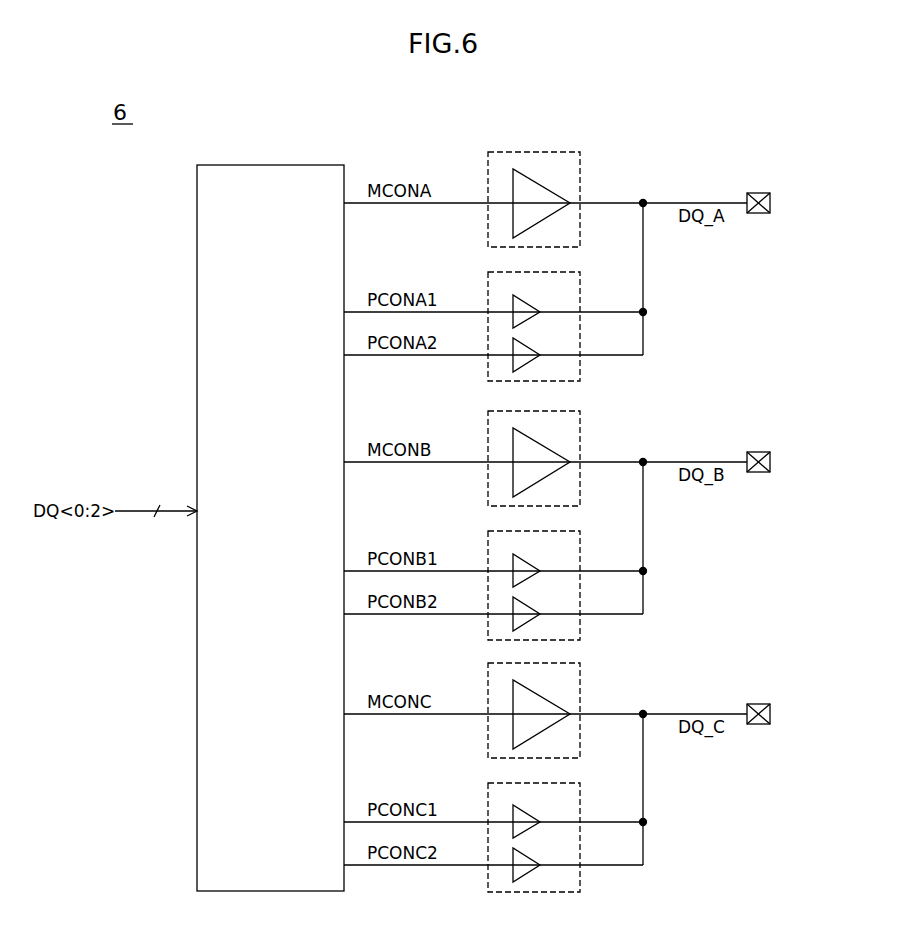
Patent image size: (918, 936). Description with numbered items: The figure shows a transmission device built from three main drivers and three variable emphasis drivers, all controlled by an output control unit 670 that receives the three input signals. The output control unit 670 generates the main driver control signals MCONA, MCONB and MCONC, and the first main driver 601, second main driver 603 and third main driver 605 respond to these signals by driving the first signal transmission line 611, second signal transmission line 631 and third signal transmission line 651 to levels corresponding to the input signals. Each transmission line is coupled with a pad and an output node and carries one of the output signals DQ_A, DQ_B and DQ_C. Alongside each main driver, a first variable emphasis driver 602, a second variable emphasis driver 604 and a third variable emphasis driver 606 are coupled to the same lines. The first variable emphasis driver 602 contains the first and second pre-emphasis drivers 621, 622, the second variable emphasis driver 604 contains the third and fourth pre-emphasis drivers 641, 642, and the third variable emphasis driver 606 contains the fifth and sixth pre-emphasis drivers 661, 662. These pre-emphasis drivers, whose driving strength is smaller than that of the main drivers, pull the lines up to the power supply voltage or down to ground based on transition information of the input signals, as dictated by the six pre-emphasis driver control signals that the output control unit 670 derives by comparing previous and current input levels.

The output control unit 670 is at (290, 165).
The first main driver 601 is at (580, 165).
The first variable emphasis driver 602 is at (556, 309).
The first pre-emphasis driver 621 is at (531, 301).
The second pre-emphasis driver 622 is at (531, 345).
The first signal transmission line 611 is at (770, 193).
The second main driver 603 is at (580, 424).
The second variable emphasis driver 604 is at (556, 568).
The third pre-emphasis driver 641 is at (531, 560).
The fourth pre-emphasis driver 642 is at (531, 604).
The second signal transmission line 631 is at (770, 452).
The third main driver 605 is at (580, 675).
The third variable emphasis driver 606 is at (556, 819).
The fifth pre-emphasis driver 661 is at (531, 812).
The sixth pre-emphasis driver 662 is at (531, 856).
The third signal transmission line 651 is at (770, 704).